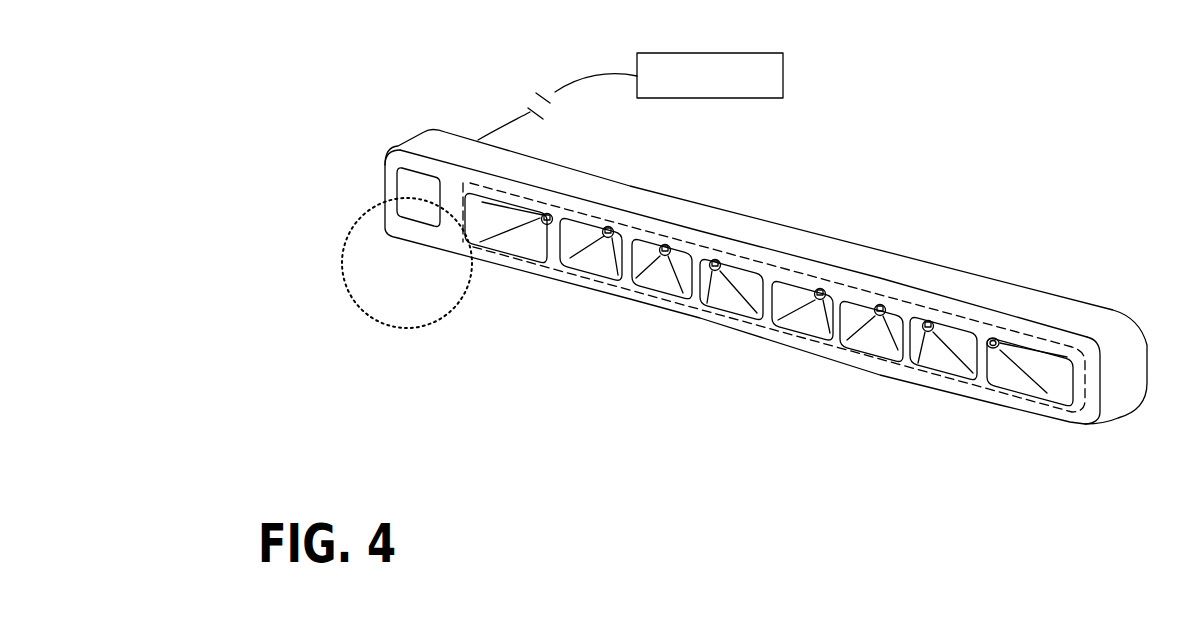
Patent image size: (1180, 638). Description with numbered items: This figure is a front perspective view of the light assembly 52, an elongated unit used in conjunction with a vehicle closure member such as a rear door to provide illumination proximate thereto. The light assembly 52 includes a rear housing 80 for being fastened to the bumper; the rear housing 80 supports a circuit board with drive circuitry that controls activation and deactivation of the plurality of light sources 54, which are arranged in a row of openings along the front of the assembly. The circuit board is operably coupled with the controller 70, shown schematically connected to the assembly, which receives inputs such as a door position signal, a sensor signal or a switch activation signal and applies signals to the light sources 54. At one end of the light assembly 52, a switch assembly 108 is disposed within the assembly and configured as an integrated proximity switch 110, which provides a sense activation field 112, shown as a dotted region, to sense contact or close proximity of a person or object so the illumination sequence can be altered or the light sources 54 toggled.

The light assembly 52 is at (775, 160).
The light sources 54 is at (606, 235).
The controller 70 is at (783, 74).
The rear housing 80 is at (832, 247).
The switch assembly 108 is at (418, 166).
The proximity switch 110 is at (413, 203).
The sense activation field 112 is at (340, 243).